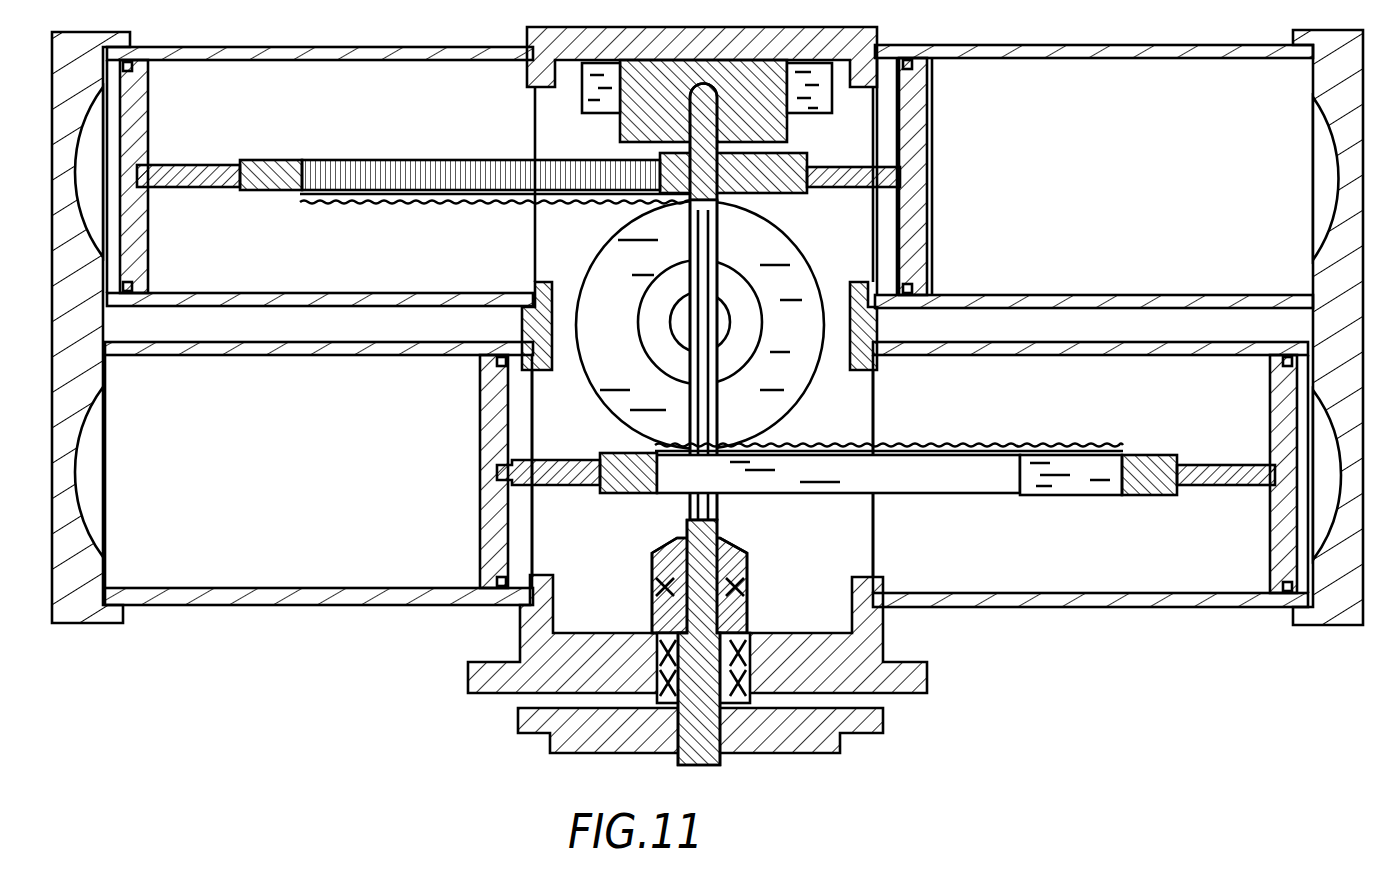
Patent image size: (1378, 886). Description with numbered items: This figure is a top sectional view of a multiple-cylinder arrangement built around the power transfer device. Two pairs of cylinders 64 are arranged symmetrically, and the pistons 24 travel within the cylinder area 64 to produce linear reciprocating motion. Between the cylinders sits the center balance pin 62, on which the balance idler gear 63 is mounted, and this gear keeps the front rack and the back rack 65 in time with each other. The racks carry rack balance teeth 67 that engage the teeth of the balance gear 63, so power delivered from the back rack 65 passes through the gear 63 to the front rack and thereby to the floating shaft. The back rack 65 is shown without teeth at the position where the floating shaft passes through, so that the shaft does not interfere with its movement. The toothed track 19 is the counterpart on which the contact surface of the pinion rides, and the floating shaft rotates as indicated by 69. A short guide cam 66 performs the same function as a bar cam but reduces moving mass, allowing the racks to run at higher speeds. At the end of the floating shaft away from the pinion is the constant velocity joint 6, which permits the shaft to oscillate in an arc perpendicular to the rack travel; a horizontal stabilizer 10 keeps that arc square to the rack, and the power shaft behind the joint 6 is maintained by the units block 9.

The constant velocity joint 6 is at (745, 566).
The units block 9 is at (611, 642).
The horizontal stabilizer 10 is at (783, 118).
The track 19 is at (346, 128).
The piston 24 is at (928, 148).
The center balance pin 62 is at (723, 310).
The balance idler gear 63 is at (792, 410).
The cylinder 64 is at (292, 493).
The back rack 65 is at (890, 487).
The short guide cam 66 is at (580, 88).
The rack balance teeth 67 is at (1048, 445).
The rotation of floating shaft 69 is at (412, 208).